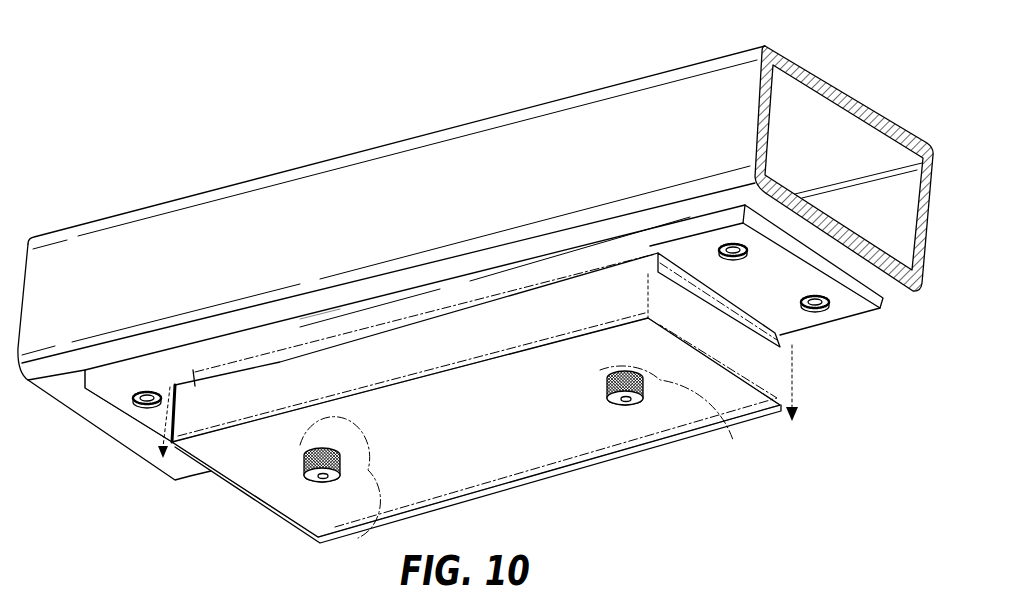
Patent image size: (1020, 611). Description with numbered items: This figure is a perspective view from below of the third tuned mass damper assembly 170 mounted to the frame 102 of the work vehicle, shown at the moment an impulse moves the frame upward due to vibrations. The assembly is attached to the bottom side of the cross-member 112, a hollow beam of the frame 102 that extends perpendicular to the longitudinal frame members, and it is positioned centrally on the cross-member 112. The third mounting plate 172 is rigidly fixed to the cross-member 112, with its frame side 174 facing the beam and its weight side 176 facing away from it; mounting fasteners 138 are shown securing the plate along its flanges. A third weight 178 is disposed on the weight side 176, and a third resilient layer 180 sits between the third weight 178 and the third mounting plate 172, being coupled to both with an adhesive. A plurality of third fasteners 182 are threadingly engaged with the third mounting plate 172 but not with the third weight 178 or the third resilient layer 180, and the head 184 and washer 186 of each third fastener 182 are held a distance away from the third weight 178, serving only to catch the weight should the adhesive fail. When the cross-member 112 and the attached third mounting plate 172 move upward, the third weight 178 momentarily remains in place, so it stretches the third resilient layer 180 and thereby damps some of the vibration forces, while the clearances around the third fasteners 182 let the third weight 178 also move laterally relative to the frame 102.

The frame 102 is at (475, 261).
The cross-member 112 is at (553, 133).
The third mounting plate 172 is at (147, 370).
The frame side 174 is at (333, 300).
The third resilient layer 180 is at (682, 271).
The third weight 178 is at (507, 447).
The weight side 176 is at (775, 283).
The mounting fasteners 138 is at (147, 415).
The head 184 is at (308, 466).
The third fasteners 182 is at (323, 480).
The washer 186 is at (534, 466).
The third tuned mass damper assembly 170 is at (652, 484).